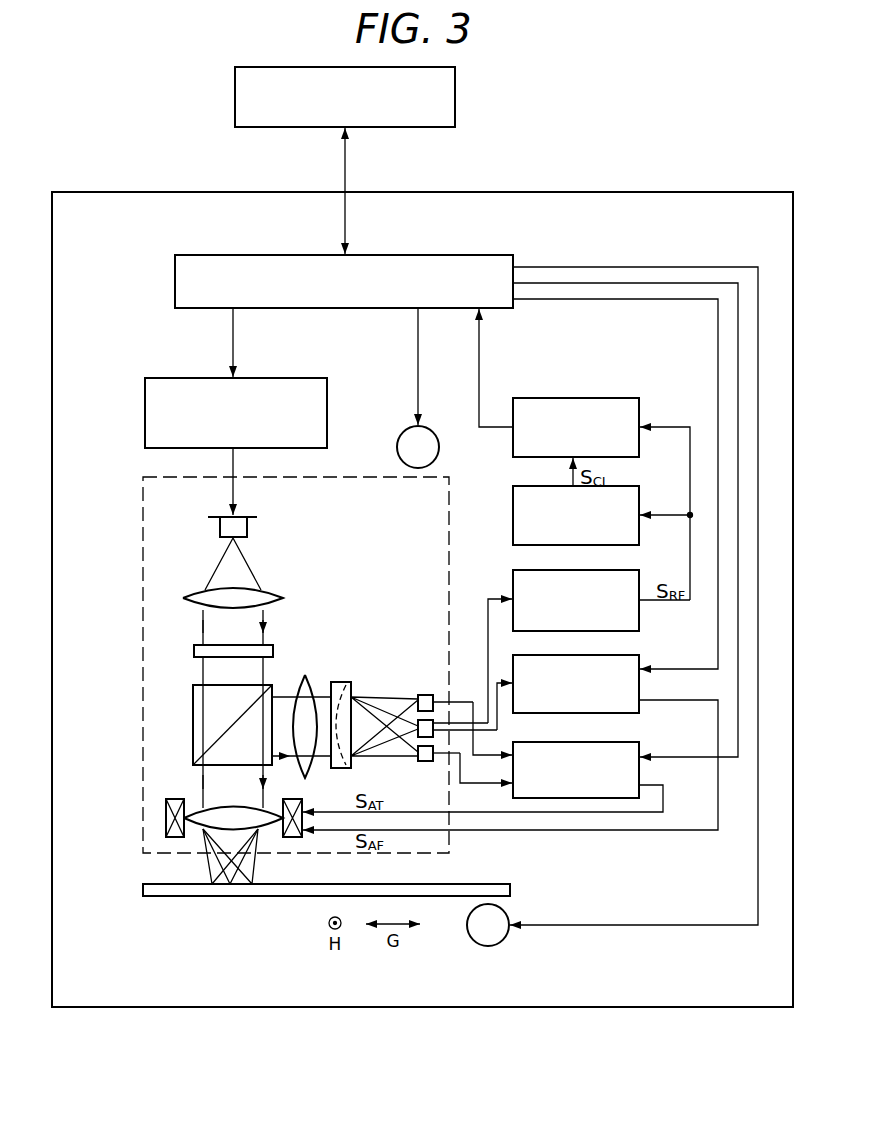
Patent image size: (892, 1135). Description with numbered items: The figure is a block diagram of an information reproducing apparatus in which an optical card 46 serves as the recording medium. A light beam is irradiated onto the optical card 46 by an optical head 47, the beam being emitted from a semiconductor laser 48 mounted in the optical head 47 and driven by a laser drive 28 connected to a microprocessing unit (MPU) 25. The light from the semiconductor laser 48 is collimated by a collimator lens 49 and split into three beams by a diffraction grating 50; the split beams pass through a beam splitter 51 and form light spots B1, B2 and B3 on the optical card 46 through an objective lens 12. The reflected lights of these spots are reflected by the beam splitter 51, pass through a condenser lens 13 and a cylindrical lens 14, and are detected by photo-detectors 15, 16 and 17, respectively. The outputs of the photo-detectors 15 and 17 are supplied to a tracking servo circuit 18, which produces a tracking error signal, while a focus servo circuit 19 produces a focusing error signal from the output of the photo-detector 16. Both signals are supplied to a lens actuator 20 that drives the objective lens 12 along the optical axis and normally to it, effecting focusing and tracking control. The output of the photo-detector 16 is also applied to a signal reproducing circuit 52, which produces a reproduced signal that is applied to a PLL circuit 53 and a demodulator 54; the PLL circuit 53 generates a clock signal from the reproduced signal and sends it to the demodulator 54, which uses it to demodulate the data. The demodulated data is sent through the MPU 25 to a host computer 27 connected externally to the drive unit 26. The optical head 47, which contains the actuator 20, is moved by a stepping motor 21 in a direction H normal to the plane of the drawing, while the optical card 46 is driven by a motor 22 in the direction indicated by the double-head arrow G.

The objective lens 12 is at (190, 803).
The condenser lens 13 is at (305, 675).
The cylindrical lens 14 is at (341, 682).
The photo-detector 15 is at (420, 695).
The photo-detector 16 is at (433, 721).
The photo-detector 17 is at (428, 762).
The tracking servo circuit 18 is at (642, 744).
The focus servo circuit 19 is at (642, 657).
The lens actuator 20 is at (298, 800).
The stepping motor 21 is at (398, 440).
The motor 22 is at (493, 947).
The microprocessing unit (MPU) 25 is at (175, 280).
The drive unit 26 is at (722, 192).
The host computer 27 is at (455, 95).
The laser drive 28 is at (285, 378).
The optical card 46 is at (488, 884).
The optical head 47 is at (143, 527).
The semiconductor laser 48 is at (250, 527).
The collimator lens 49 is at (285, 598).
The diffraction grating 50 is at (194, 650).
The beam splitter 51 is at (193, 702).
The signal reproducing circuit 52 is at (513, 583).
The PLL circuit 53 is at (513, 500).
The demodulator 54 is at (590, 398).
The light spot B1 is at (252, 896).
The light spot B2 is at (230, 896).
The light spot B3 is at (212, 896).